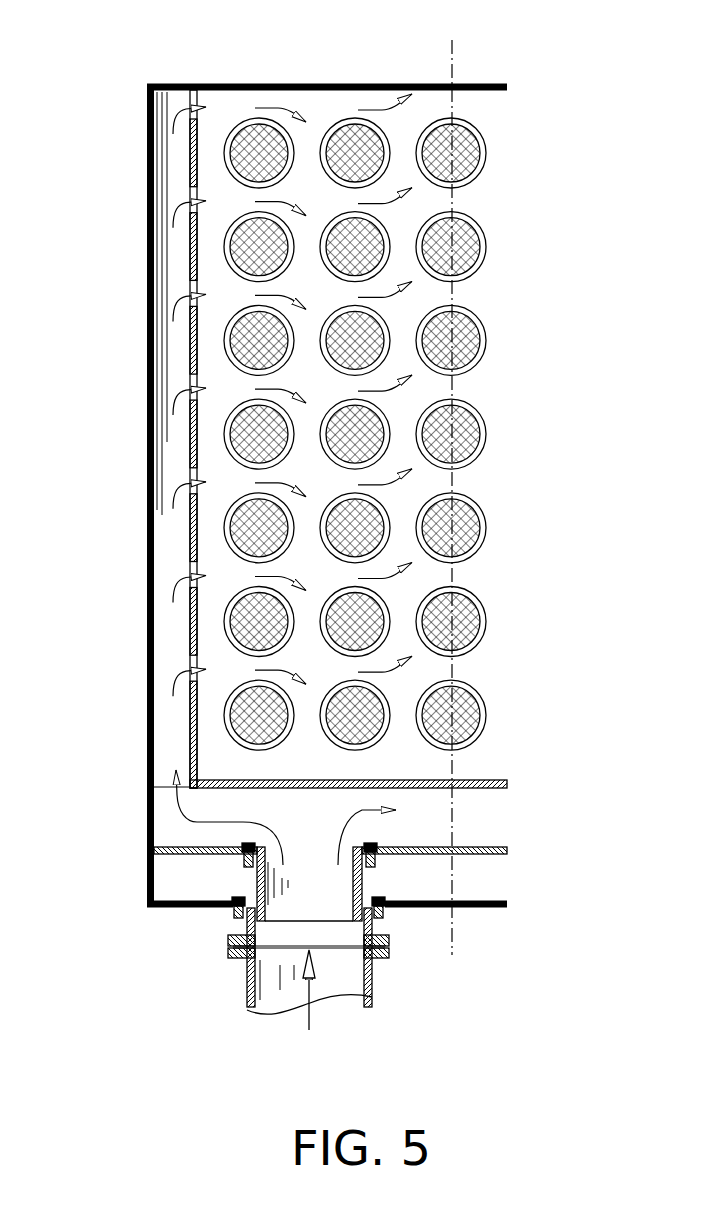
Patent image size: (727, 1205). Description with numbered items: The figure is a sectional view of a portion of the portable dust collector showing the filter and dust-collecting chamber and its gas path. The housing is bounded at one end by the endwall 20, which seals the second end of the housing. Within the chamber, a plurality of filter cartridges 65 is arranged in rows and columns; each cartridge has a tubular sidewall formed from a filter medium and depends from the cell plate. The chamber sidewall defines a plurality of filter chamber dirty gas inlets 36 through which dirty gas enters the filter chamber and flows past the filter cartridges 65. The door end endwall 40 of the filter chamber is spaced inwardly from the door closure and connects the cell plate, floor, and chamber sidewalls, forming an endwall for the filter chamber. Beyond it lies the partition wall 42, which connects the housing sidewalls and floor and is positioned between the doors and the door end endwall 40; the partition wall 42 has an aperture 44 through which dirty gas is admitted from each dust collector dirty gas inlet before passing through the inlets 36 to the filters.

The endwall 20 is at (310, 83).
The filter chamber dirty gas inlets 36 is at (190, 568).
The door end endwall 40 is at (483, 779).
The partition wall 42 is at (482, 848).
The aperture 44 is at (338, 848).
The filter cartridges 65 is at (455, 520).